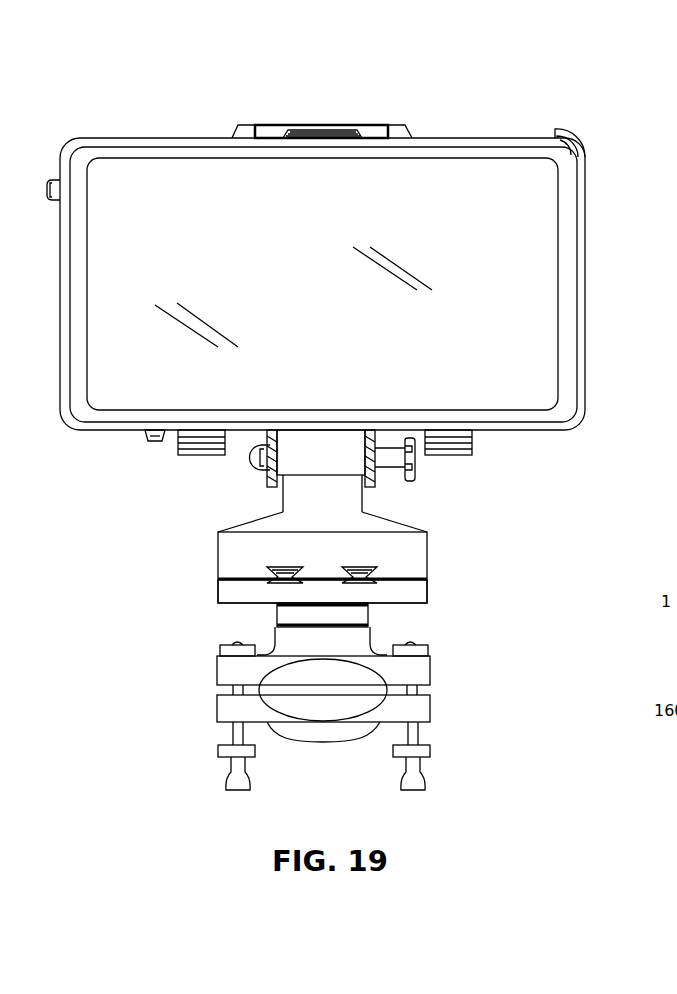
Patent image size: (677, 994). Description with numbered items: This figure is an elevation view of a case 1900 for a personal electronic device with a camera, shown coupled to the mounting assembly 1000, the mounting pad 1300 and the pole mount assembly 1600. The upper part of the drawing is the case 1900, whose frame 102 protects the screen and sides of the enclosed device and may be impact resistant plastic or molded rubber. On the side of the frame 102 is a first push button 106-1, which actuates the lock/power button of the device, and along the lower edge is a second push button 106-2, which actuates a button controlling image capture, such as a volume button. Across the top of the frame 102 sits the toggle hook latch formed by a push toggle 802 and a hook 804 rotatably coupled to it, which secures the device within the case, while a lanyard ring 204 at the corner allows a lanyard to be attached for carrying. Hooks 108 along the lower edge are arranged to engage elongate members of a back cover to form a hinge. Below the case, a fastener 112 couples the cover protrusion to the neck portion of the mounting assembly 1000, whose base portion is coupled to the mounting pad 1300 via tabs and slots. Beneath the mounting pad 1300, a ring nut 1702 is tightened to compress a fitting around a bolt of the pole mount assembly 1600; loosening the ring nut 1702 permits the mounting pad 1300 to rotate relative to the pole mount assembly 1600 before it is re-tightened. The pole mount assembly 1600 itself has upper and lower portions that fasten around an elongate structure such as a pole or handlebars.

The case 1900 is at (158, 112).
The frame 102 is at (75, 372).
The first push button 106-1 is at (46, 183).
The second push button 106-2 is at (157, 446).
The push toggle 802 is at (312, 122).
The hook 804 is at (398, 122).
The lanyard ring 204 is at (566, 123).
The hooks 108 is at (468, 460).
The fastener 112 is at (412, 483).
The mounting assembly 1000 is at (198, 551).
The mounting pad 1300 is at (430, 590).
The ring nut 1702 is at (270, 616).
The pole mount assembly 1600 is at (447, 680).